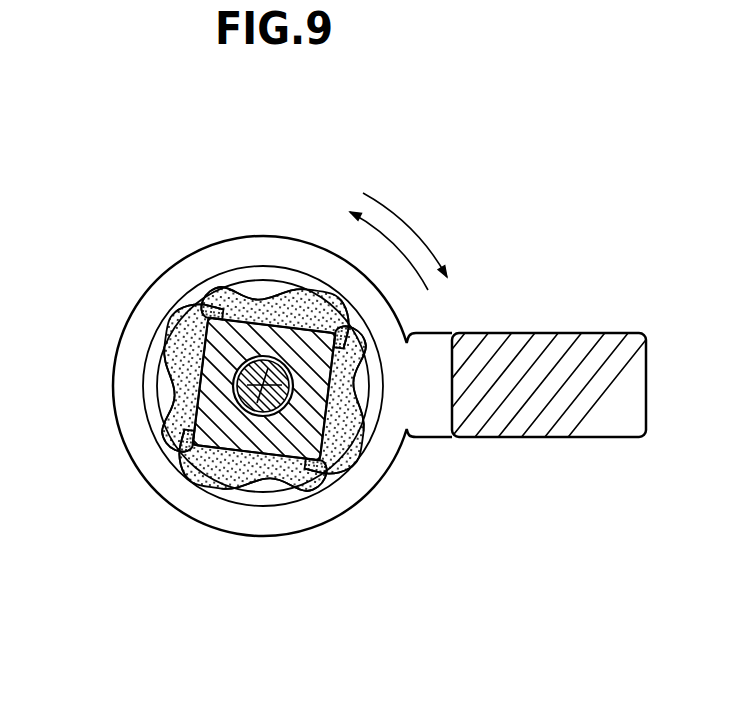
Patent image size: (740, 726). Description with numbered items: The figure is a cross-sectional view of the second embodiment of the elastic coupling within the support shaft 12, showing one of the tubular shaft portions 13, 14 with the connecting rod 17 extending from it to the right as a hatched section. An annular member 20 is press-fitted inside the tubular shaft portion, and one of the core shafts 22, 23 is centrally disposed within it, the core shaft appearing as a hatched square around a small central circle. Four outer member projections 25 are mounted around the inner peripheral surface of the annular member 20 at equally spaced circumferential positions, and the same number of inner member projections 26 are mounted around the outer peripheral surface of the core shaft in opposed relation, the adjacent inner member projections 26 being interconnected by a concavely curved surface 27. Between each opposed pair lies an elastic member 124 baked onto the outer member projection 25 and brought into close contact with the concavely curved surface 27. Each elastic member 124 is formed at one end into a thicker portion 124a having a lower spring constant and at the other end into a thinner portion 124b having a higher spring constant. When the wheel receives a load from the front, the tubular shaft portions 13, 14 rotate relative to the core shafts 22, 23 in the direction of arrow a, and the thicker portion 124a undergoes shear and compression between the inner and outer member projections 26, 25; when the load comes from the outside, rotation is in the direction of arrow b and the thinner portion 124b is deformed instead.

The support shaft 12 is at (364, 505).
The tubular shaft portion 13 is at (262, 297).
The tubular shaft portion 14 is at (266, 296).
The connecting rod 17 is at (541, 345).
The annular member 20 is at (153, 392).
The core shaft 22 is at (261, 417).
The core shaft 23 is at (265, 456).
The outer member projection 25 is at (257, 243).
The inner member projection 26 is at (207, 304).
The concavely curved surface 27 is at (248, 297).
The elastic member 124 is at (330, 298).
The thicker portion 124a is at (322, 292).
The thinner portion 124b is at (222, 290).
The arrow a is at (415, 246).
The arrow b is at (376, 242).